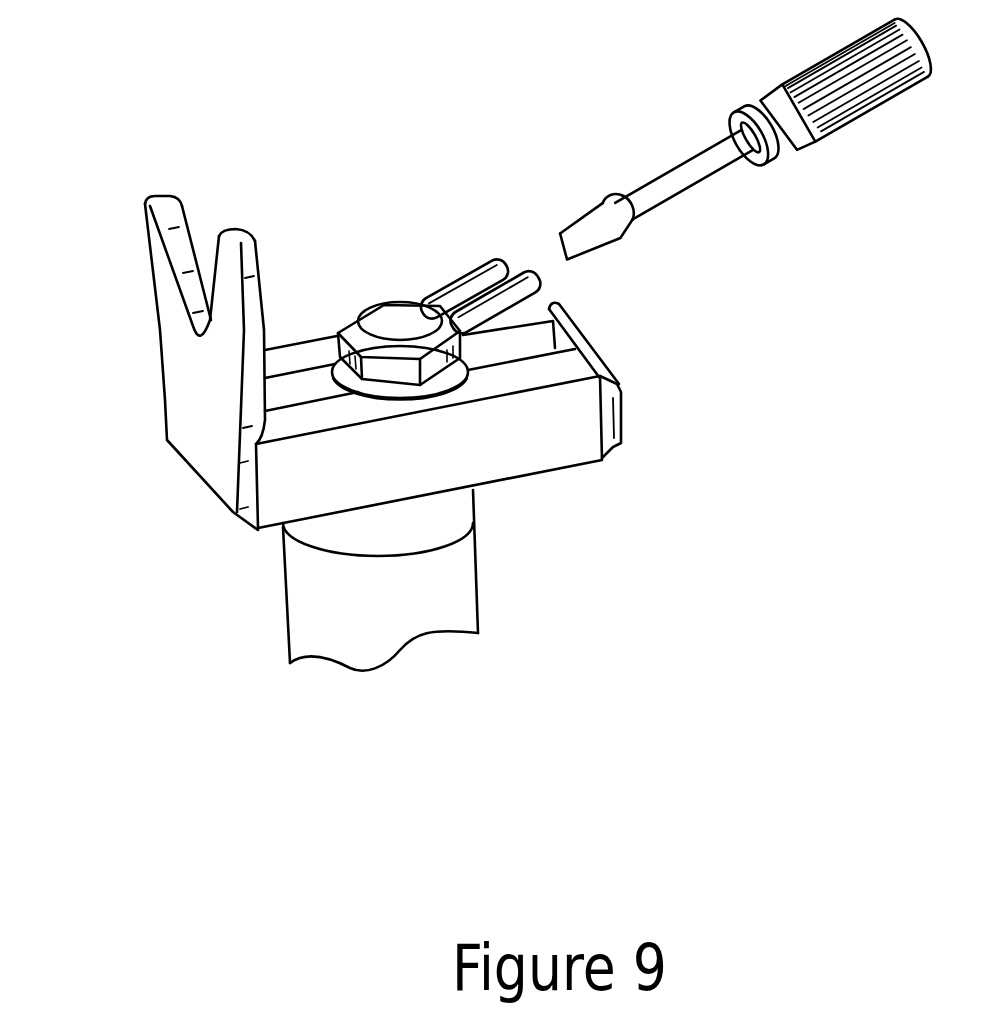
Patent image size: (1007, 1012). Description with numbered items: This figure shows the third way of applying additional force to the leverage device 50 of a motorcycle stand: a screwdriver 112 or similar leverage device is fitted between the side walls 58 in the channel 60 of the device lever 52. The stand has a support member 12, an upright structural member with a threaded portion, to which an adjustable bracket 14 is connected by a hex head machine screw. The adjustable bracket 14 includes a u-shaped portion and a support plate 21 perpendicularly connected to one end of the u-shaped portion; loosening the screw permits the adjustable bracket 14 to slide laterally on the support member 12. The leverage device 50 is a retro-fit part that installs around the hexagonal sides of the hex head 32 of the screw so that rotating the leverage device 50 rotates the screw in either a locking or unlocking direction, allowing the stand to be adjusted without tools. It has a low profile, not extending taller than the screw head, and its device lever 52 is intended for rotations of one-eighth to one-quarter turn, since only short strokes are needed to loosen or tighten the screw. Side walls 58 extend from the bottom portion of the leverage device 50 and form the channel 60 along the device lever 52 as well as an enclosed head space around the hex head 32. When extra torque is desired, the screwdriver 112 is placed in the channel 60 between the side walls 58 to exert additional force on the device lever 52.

The support member 12 is at (463, 595).
The adjustable bracket 14 is at (547, 473).
The support plate 21 is at (153, 293).
The hex head 32 is at (387, 322).
The leverage device 50 is at (342, 338).
The device lever 52 is at (570, 330).
The side walls 58 is at (474, 265).
The channel 60 is at (523, 262).
The screwdriver 112 is at (830, 137).